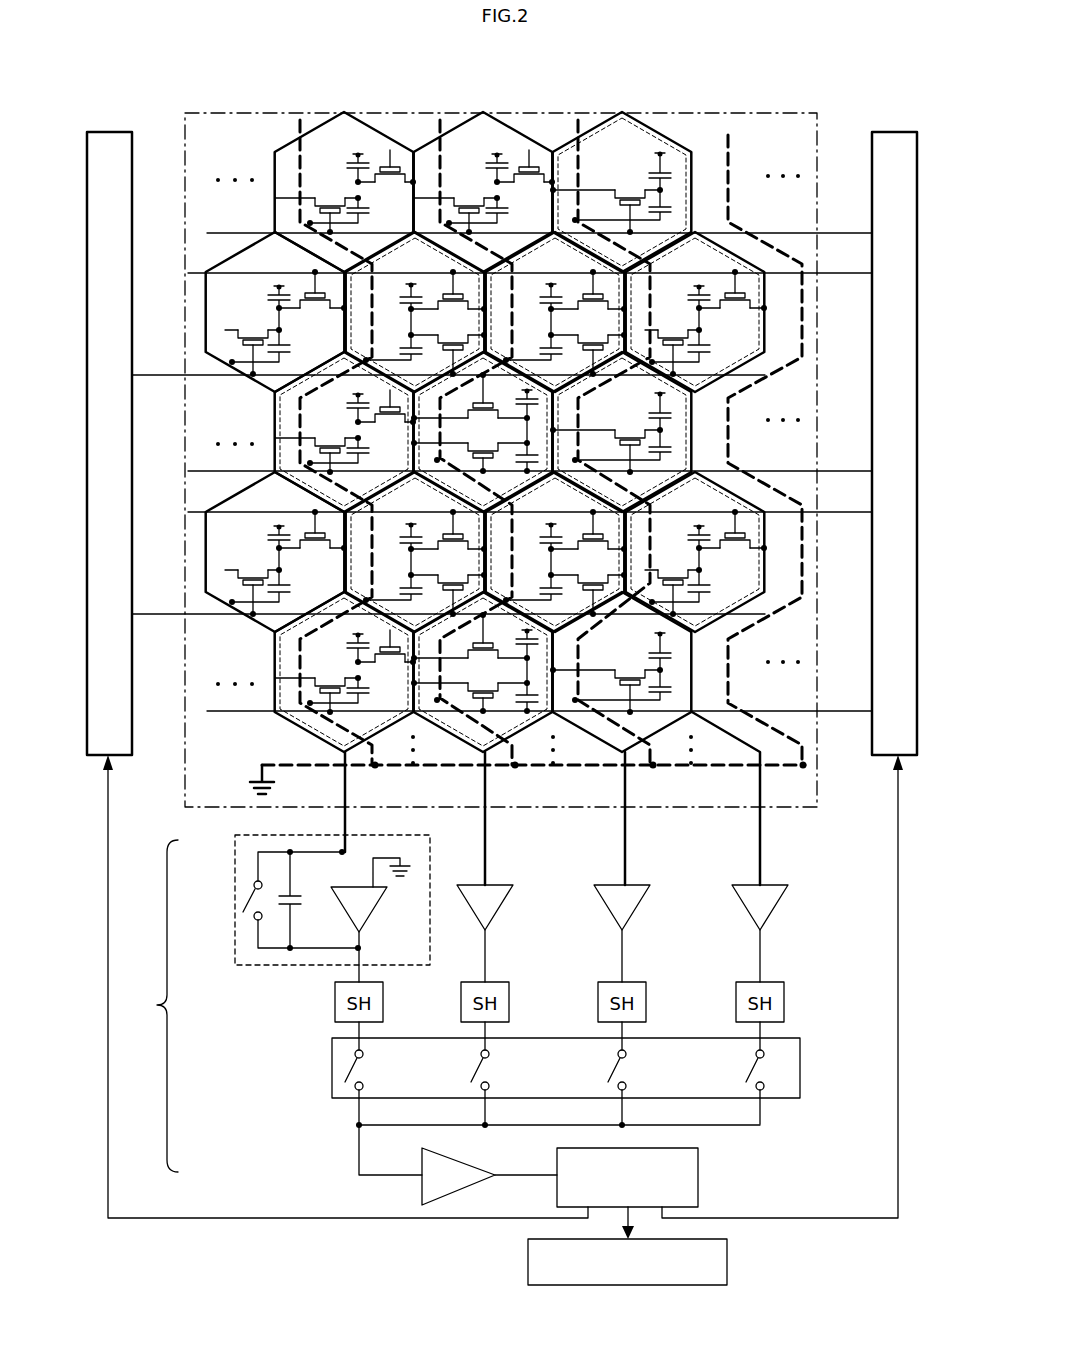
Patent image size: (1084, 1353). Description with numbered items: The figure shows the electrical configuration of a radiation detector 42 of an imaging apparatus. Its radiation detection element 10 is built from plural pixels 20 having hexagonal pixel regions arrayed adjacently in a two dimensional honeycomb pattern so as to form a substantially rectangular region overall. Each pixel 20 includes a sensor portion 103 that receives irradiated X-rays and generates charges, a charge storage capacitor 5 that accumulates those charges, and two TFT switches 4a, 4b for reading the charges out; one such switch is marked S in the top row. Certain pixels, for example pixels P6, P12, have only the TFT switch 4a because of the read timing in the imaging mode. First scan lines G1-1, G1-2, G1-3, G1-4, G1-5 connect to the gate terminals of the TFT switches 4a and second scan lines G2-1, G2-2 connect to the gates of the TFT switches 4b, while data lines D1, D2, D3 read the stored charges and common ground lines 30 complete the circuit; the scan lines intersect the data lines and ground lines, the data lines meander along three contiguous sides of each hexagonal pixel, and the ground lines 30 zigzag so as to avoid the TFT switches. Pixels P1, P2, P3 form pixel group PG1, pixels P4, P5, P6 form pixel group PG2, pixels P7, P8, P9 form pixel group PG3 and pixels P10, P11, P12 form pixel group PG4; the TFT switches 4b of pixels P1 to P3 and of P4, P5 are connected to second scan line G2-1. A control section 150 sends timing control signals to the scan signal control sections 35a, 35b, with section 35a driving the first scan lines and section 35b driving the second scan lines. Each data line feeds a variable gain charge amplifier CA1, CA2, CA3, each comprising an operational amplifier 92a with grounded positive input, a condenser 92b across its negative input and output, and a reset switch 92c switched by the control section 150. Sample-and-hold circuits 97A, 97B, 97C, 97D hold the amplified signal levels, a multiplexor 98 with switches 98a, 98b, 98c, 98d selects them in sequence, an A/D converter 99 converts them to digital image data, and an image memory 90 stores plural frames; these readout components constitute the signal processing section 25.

The radiation detection element 10 is at (688, 113).
The pixel 20 is at (576, 126).
The common ground line 30 is at (297, 132).
The radiation detector 42 is at (598, 62).
The scan signal control section 35a is at (904, 130).
The scan signal control section 35b is at (112, 130).
The sensor portion 103 is at (352, 178).
The charge storage capacitor 5 is at (402, 350).
The switching element S is at (366, 216).
The TFT switch 4a is at (528, 433).
The TFT switch 4b is at (532, 498).
The pixel P1 is at (416, 312).
The pixel P2 is at (345, 432).
The pixel P3 is at (481, 432).
The pixel P4 is at (556, 312).
The pixel P5 is at (696, 312).
The pixel P6 is at (620, 192).
The pixel P7 is at (416, 552).
The pixel P8 is at (345, 672).
The pixel P9 is at (481, 672).
The pixel P10 is at (556, 552).
The pixel P11 is at (696, 552).
The pixel P12 is at (620, 432).
The pixel group PG1 is at (272, 423).
The pixel group PG2 is at (690, 208).
The pixel group PG3 is at (272, 663).
The pixel group PG4 is at (695, 445).
The first scan line G1-1 is at (539, 219).
The first scan line G1-2 is at (530, 292).
The first scan line G1-3 is at (530, 458).
The first scan line G1-4 is at (530, 527).
The first scan line G1-5 is at (539, 698).
The second scan line G2-1 is at (448, 360).
The second scan line G2-2 is at (448, 599).
The data line D1 is at (469, 818).
The data line D2 is at (607, 818).
The data line D3 is at (532, 798).
The charge amplifier CA1 is at (505, 905).
The charge amplifier CA2 is at (642, 905).
The charge amplifier CA3 is at (236, 862).
The operational amplifier 92a is at (374, 914).
The condenser 92b is at (297, 897).
The reset switch 92c is at (244, 906).
The sample-and-hold circuit 97A is at (335, 1003).
The sample-and-hold circuit 97B is at (461, 1003).
The sample-and-hold circuit 97C is at (598, 1003).
The sample-and-hold circuit 97D is at (736, 1003).
The multiplexor 98 is at (331, 1075).
The switch 98a is at (367, 1070).
The switch 98b is at (493, 1070).
The switch 98c is at (630, 1070).
The switch 98d is at (767, 1090).
The A/D converter 99 is at (462, 1160).
The control section 150 is at (698, 1178).
The image memory 90 is at (728, 1262).
The signal processing section 25 is at (153, 1006).